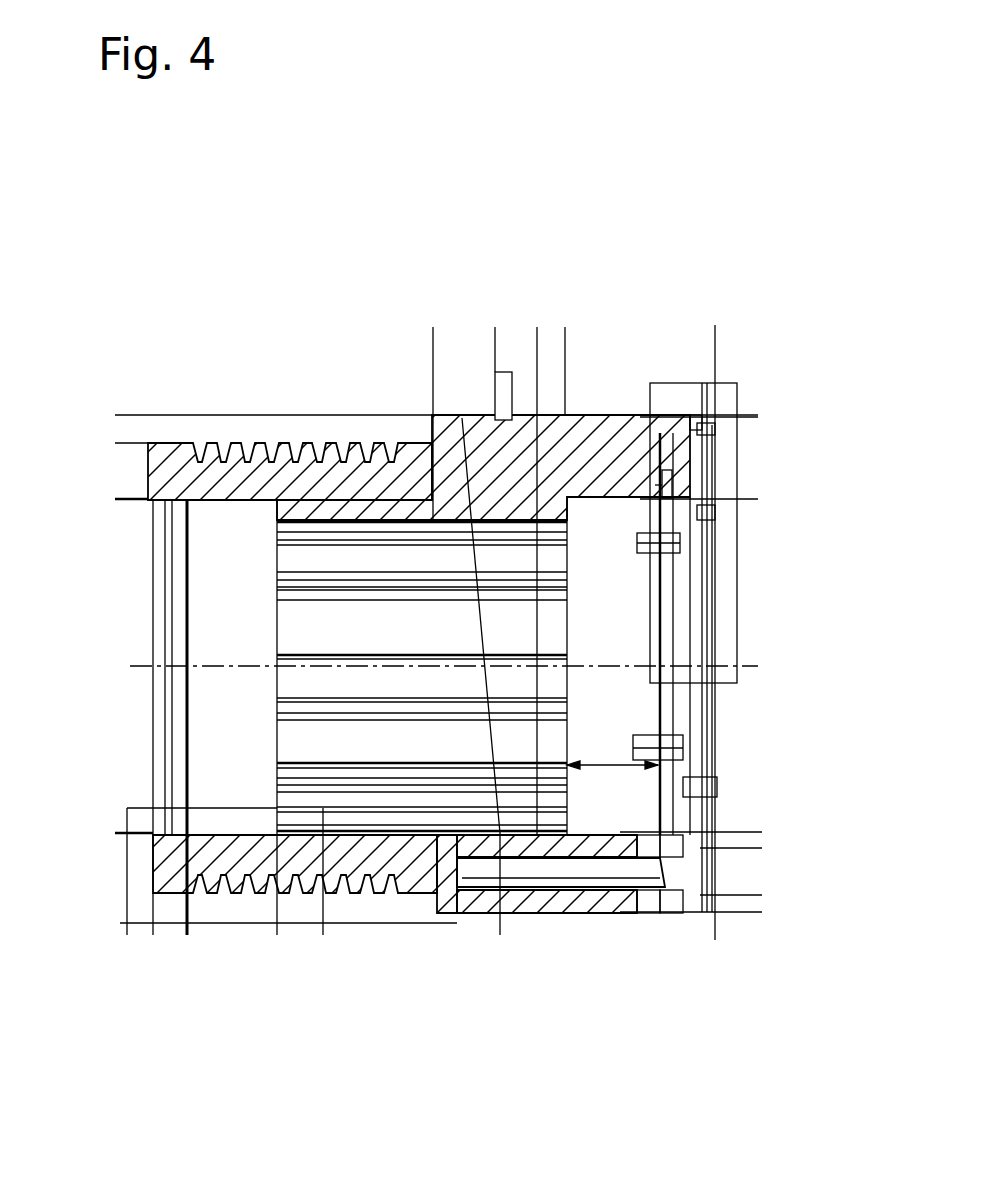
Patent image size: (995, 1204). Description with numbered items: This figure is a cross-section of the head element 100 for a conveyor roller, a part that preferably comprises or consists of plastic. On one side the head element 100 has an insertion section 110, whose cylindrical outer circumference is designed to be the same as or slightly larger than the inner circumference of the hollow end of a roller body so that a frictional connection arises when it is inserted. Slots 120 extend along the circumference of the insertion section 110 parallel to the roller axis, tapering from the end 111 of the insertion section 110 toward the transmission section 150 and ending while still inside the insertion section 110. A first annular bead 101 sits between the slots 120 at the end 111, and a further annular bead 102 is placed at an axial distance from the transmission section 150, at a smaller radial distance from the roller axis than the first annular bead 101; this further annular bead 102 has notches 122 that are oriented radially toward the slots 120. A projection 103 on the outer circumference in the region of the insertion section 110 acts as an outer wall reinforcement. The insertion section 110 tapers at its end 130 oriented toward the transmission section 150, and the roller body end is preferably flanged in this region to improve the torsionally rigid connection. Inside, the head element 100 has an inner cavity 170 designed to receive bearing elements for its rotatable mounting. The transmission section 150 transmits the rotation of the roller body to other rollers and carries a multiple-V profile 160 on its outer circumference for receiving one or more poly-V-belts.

The head element 100 is at (683, 145).
The first annular bead 101 is at (705, 428).
The further annular bead 102 is at (668, 490).
The projection 103 is at (672, 458).
The insertion section 110 is at (715, 372).
The end of the insertion section 111 is at (720, 721).
The slots 120 is at (707, 512).
The notches 122 is at (667, 540).
The end of the insertion section oriented towards the transmission section 130 is at (540, 545).
The transmission section 150 is at (427, 412).
The multiple-V profile 160 is at (248, 890).
The inner cavity 170 is at (227, 621).